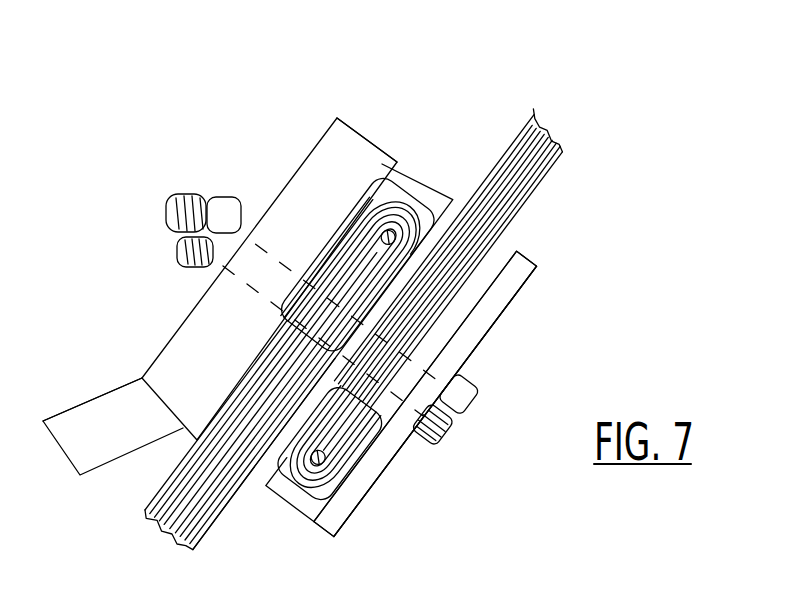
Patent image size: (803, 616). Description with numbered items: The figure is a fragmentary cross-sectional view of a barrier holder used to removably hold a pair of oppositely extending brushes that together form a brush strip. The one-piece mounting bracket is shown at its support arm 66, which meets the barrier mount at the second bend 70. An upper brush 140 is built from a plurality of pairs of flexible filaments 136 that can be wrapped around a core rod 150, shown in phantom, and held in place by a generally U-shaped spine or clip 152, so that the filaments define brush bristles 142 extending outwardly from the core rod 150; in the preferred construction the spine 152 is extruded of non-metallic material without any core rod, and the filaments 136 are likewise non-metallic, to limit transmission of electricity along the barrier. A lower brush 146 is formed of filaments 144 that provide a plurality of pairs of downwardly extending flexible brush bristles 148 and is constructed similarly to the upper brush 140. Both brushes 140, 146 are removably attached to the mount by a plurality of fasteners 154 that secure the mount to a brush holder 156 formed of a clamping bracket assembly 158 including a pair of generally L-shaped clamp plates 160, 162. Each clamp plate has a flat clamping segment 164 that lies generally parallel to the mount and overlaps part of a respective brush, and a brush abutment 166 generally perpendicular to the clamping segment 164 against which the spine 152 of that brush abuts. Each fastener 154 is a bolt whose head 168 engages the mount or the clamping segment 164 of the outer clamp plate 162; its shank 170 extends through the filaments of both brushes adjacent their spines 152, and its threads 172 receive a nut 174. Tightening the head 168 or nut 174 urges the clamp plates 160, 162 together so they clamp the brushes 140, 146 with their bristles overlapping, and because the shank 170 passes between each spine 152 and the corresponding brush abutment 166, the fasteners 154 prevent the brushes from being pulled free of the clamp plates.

The support arm 66 is at (100, 395).
The second bend 70 is at (143, 377).
The filaments 136 is at (563, 176).
The brush 140 is at (618, 78).
The brush bristles 142 is at (564, 152).
The filaments 144 is at (188, 494).
The brush 146 is at (160, 537).
The brush bristles 148 is at (192, 536).
The core rod 150 is at (393, 230).
The spine 152 is at (387, 182).
The fasteners 154 is at (492, 387).
The brush holder 156 is at (582, 250).
The clamping bracket assembly 158 is at (508, 320).
The clamp plate 160 is at (356, 180).
The clamp plate 162 is at (524, 283).
The clamping segment 164 is at (326, 130).
The brush abutment 166 is at (436, 189).
The head 168 is at (480, 406).
The shank 170 is at (180, 195).
The threads 172 is at (165, 214).
The nut 174 is at (228, 196).